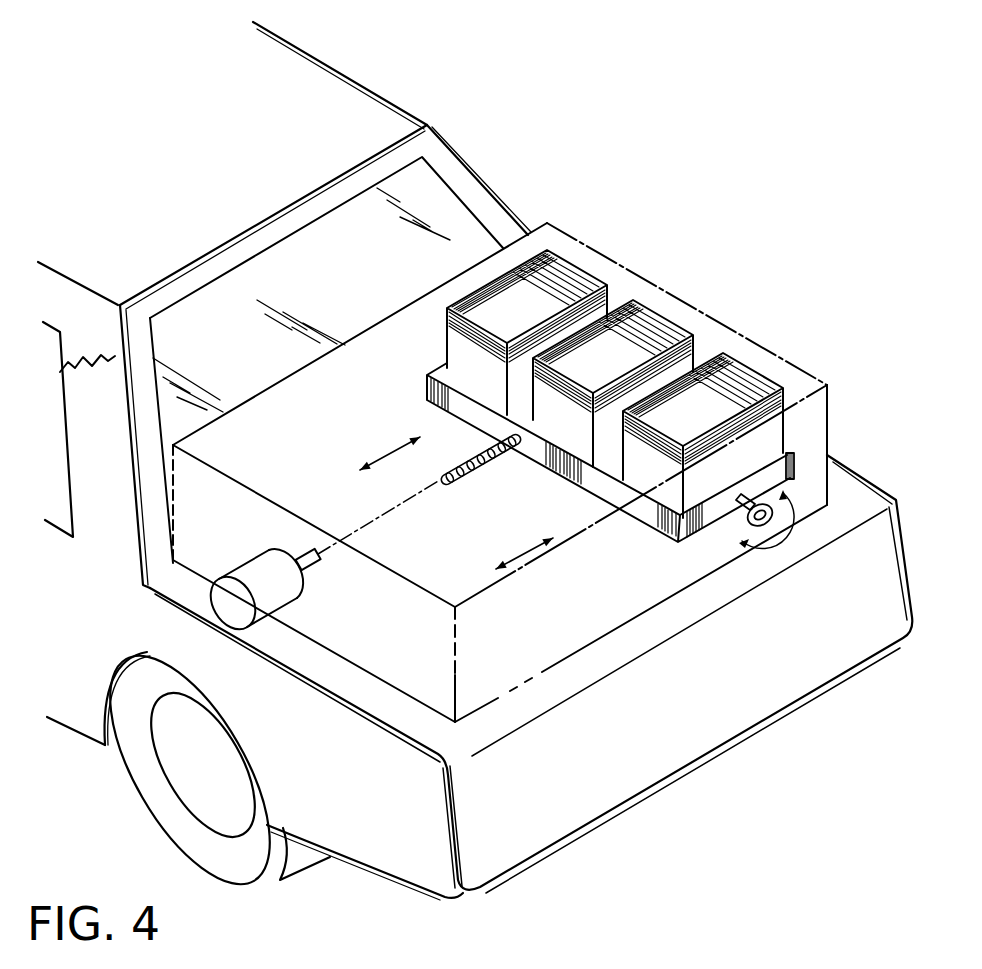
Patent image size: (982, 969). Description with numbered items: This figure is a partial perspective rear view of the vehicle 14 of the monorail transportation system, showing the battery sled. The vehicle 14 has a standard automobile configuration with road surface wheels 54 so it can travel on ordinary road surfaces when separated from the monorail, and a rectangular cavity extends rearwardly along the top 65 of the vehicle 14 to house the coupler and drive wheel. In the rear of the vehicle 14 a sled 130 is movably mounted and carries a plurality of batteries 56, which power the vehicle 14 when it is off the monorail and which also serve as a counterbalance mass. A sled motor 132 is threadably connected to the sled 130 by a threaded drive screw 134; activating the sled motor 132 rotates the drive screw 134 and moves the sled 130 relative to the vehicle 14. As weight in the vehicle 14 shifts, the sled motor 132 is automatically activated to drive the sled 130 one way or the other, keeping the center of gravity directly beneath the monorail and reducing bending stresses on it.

The vehicle 14 is at (414, 99).
The top 65 is at (314, 347).
The batteries 56 is at (720, 352).
The sled 130 is at (804, 459).
The sled motor 132 is at (246, 566).
The threaded drive screw 134 is at (480, 469).
The road surface wheels 54 is at (282, 880).